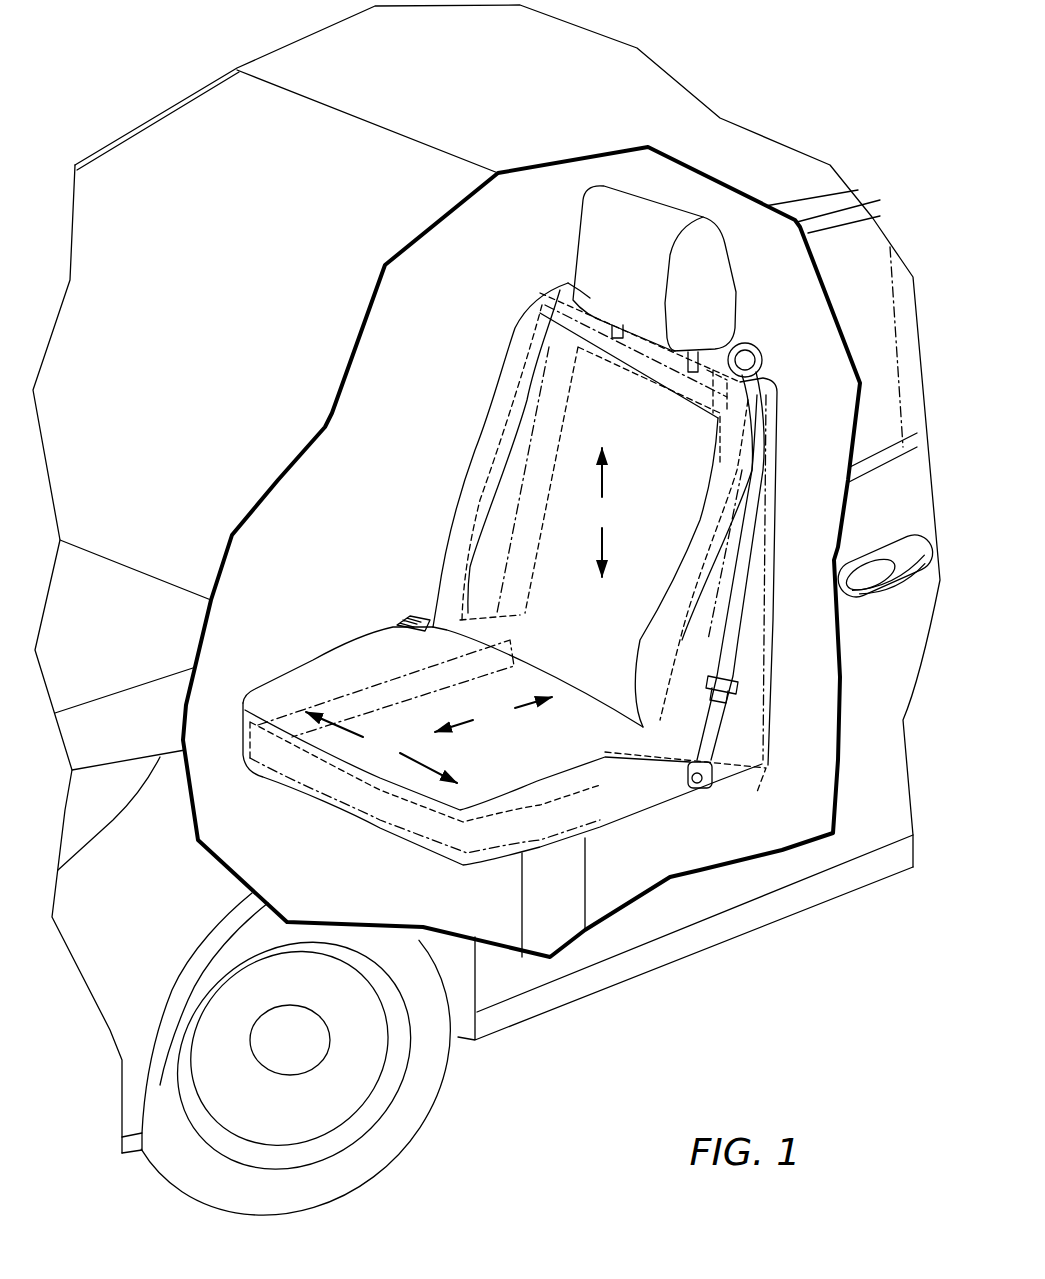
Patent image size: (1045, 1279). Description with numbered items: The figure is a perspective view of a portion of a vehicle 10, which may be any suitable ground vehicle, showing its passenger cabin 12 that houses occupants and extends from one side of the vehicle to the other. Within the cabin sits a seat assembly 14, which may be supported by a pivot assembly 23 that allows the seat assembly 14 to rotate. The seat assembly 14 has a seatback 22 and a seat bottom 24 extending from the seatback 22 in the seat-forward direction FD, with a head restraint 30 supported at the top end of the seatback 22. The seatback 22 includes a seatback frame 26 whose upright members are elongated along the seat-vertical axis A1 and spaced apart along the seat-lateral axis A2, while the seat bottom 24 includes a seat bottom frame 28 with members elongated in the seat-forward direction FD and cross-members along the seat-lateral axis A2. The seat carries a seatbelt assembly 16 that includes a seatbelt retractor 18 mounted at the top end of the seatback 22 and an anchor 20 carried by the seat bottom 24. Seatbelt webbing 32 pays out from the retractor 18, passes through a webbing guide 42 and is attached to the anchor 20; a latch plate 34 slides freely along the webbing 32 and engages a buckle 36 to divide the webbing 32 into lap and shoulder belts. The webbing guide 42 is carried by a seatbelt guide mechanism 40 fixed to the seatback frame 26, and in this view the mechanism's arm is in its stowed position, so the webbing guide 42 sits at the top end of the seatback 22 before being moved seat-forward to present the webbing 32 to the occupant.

The vehicle 10 is at (117, 102).
The passenger cabin 12 is at (490, 226).
The seat assembly 14 is at (790, 540).
The seatbelt assembly 16 is at (763, 473).
The seatbelt retractor 18 is at (717, 398).
The anchor 20 is at (706, 779).
The seatback 22 is at (607, 400).
The pivot assembly 23 is at (522, 910).
The seat bottom 24 is at (291, 785).
The seatback frame 26 is at (512, 413).
The seat bottom frame 28 is at (358, 790).
The head restraint 30 is at (576, 256).
The seatbelt webbing 32 is at (745, 596).
The latch plate 34 is at (740, 683).
The buckle 36 is at (413, 617).
The seatbelt guide mechanism 40 is at (746, 334).
The webbing guide 42 is at (761, 342).
The seat-vertical axis A1 is at (602, 512).
The seat-lateral axis A2 is at (381, 747).
The seat-forward direction FD is at (493, 714).